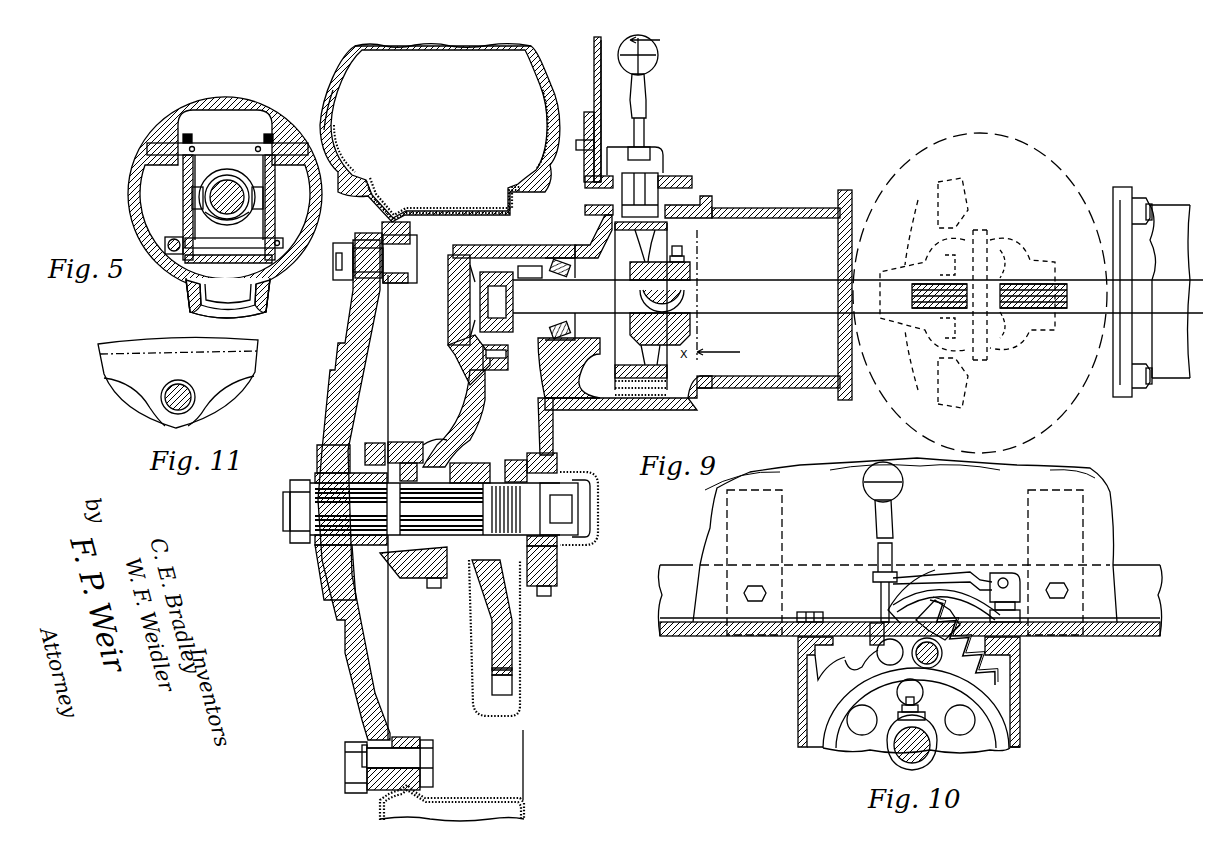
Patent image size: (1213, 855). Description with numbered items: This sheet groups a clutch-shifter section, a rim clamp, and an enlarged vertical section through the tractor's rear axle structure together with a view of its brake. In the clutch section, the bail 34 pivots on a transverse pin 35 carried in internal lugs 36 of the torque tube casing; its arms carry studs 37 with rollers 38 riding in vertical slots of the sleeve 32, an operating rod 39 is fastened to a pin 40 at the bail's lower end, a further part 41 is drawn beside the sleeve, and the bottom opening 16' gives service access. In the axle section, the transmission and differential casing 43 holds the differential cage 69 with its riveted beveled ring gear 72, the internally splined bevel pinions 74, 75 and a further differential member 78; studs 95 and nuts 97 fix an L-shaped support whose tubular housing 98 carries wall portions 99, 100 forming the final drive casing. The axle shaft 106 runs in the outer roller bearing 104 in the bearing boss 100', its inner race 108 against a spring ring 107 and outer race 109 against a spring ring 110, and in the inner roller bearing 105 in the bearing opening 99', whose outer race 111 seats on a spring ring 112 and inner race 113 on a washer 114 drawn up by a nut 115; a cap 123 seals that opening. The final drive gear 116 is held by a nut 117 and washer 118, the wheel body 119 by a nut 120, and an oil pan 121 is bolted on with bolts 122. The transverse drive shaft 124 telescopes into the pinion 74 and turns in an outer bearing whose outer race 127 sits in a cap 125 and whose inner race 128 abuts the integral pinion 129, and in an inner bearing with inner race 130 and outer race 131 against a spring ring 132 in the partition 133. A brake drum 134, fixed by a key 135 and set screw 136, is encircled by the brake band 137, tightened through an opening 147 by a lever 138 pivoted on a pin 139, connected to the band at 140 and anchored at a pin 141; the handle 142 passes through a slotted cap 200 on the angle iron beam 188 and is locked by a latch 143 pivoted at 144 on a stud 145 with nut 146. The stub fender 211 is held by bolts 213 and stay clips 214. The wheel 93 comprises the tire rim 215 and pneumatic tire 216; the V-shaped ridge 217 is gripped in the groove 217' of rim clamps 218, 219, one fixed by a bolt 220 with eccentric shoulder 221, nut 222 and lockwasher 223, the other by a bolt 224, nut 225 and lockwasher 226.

In FIG. 5, the bottom opening 16' is at (235, 305).
In FIG. 5, the sleeve 32 is at (237, 216).
In FIG. 5, the bail 34 is at (183, 176).
In FIG. 5, the transverse pin 35 is at (238, 143).
In FIG. 5, the internal lugs 36 is at (275, 172).
In FIG. 5, the studs 37 is at (263, 198).
In FIG. 5, the rollers 38 is at (192, 197).
In FIG. 5, the operating rod 39 is at (174, 238).
In FIG. 5, the pin 40 is at (278, 240).
In FIG. 5, the bearing cap 41 is at (214, 218).
In FIG. 9, the transmission and differential casing 43 is at (1046, 150).
In FIG. 9, the differential cage 69 is at (1000, 232).
In FIG. 9, the beveled ring gear 72 is at (966, 192).
In FIG. 9, the differential bevel pinion 74 is at (912, 346).
In FIG. 9, the differential bevel pinion 75 is at (1036, 258).
In FIG. 9, the pinion gear 78 is at (976, 366).
In FIG. 9, the rear wheel 93 is at (398, 95).
In FIG. 9, the studs 95 is at (1146, 218).
In FIG. 9, the nuts 97 is at (1138, 198).
In FIG. 9, the tubular housing 98 is at (760, 208).
In FIG. 10, the tubular housing 98 is at (1022, 728).
In FIG. 9, the inner side wall 99 is at (556, 426).
In FIG. 9, the bearing opening 99' is at (556, 566).
In FIG. 9, the outer side wall 100 is at (453, 418).
In FIG. 9, the bearing boss 100' is at (405, 443).
In FIG. 9, the outer roller bearing 104 is at (398, 578).
In FIG. 9, the inner roller bearing 105 is at (566, 540).
In FIG. 9, the axle shaft 106 is at (288, 522).
In FIG. 9, the spring ring 107 is at (372, 443).
In FIG. 9, the inner race 108 is at (366, 560).
In FIG. 9, the outer race 109 is at (420, 470).
In FIG. 9, the spring ring 110 is at (423, 442).
In FIG. 9, the outer race 111 is at (558, 457).
In FIG. 9, the spring ring 112 is at (520, 460).
In FIG. 9, the inner race 113 is at (592, 472).
In FIG. 9, the washer 114 is at (586, 524).
In FIG. 9, the nut 115 is at (574, 513).
In FIG. 9, the final drive gear 116 is at (490, 636).
In FIG. 9, the nut 117 is at (506, 535).
In FIG. 9, the washer 118 is at (482, 465).
In FIG. 9, the wheel body 119 is at (350, 700).
In FIG. 9, the nut 120 is at (318, 476).
In FIG. 9, the oil pan 121 is at (521, 682).
In FIG. 9, the bolts 122 is at (434, 588).
In FIG. 9, the cap 123 is at (580, 492).
In FIG. 9, the transverse drive shaft 124 is at (762, 313).
In FIG. 10, the transverse drive shaft 124 is at (893, 752).
In FIG. 9, the cap 125 is at (462, 255).
In FIG. 9, the outer race 127 is at (455, 344).
In FIG. 9, the inner race 128 is at (480, 300).
In FIG. 9, the pinion 129 is at (524, 266).
In FIG. 9, the inner race 130 is at (553, 268).
In FIG. 9, the outer race 131 is at (558, 336).
In FIG. 9, the spring ring 132 is at (590, 250).
In FIG. 9, the partition 133 is at (560, 372).
In FIG. 9, the brake drum 134 is at (667, 370).
In FIG. 10, the brake drum 134 is at (985, 760).
In FIG. 9, the key 135 is at (660, 290).
In FIG. 10, the key 135 is at (895, 728).
In FIG. 9, the set screw 136 is at (678, 246).
In FIG. 10, the set screw 136 is at (918, 694).
In FIG. 9, the brake band 137 is at (615, 390).
In FIG. 10, the brake band 137 is at (836, 700).
In FIG. 9, the lever 138 is at (660, 172).
In FIG. 10, the lever 138 is at (876, 623).
In FIG. 9, the pin 139 is at (700, 203).
In FIG. 10, the pin 139 is at (1016, 648).
In FIG. 10, the adjustable connection 140 is at (940, 600).
In FIG. 10, the pin 141 is at (877, 654).
In FIG. 9, the handle 142 is at (645, 106).
In FIG. 10, the handle 142 is at (893, 516).
In FIG. 10, the latch 143 is at (915, 578).
In FIG. 10, the pivot 144 is at (1004, 573).
In FIG. 10, the stud 145 is at (1020, 590).
In FIG. 10, the nut 146 is at (1020, 614).
In FIG. 10, the opening 147 is at (840, 622).
In FIG. 9, the angle iron beam 188 is at (700, 170).
In FIG. 10, the angle iron beam 188 is at (694, 636).
In FIG. 9, the slotted cap 200 is at (656, 152).
In FIG. 10, the slotted cap 200 is at (938, 592).
In FIG. 9, the stub fender 211 is at (594, 76).
In FIG. 10, the stub fender 211 is at (1100, 488).
In FIG. 9, the bolts 213 is at (576, 140).
In FIG. 10, the bolts 213 is at (755, 586).
In FIG. 9, the stay clips 214 is at (594, 60).
In FIG. 10, the stay clips 214 is at (782, 518).
In FIG. 9, the tire rim 215 is at (478, 212).
In FIG. 9, the pneumatic tire 216 is at (333, 92).
In FIG. 9, the ridge portion 217 is at (404, 501).
In FIG. 11, the peripheral groove 217' is at (178, 370).
In FIG. 11, the rim clamp 218 is at (252, 368).
In FIG. 9, the rim clamp 218 is at (400, 284).
In FIG. 9, the rim clamp 219 is at (406, 737).
In FIG. 11, the bolt 220 is at (188, 407).
In FIG. 9, the bolt 220 is at (338, 272).
In FIG. 11, the eccentric shoulder 221 is at (185, 374).
In FIG. 9, the eccentric shoulder 221 is at (404, 276).
In FIG. 9, the nut 222 is at (356, 280).
In FIG. 9, the lockwasher 223 is at (348, 243).
In FIG. 9, the bolt 224 is at (345, 758).
In FIG. 9, the nut 225 is at (366, 780).
In FIG. 9, the lockwasher 226 is at (360, 745).